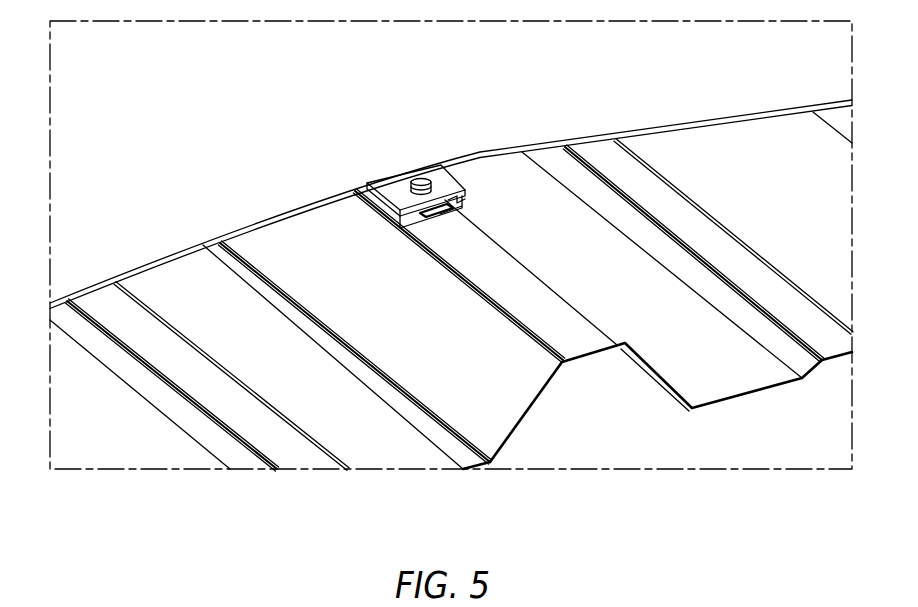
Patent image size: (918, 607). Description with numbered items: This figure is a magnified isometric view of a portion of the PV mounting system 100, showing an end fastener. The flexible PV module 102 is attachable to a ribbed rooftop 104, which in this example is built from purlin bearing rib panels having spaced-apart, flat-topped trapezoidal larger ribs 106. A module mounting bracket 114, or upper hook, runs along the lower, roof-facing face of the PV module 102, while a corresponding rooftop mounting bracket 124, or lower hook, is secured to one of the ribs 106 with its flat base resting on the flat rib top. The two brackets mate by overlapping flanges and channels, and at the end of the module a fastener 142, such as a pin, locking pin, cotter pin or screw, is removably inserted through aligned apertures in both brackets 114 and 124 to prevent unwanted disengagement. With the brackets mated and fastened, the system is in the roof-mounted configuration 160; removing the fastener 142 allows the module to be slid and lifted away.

The mounting system 100 is at (166, 106).
The flexible PV module 102 is at (224, 170).
The ribbed rooftop 104 is at (353, 418).
The larger rib 106 is at (533, 407).
The module mounting bracket 114 is at (447, 188).
The rooftop mounting bracket 124 is at (418, 230).
The fastener 142 is at (422, 178).
The roof-mounted configuration 160 is at (268, 108).